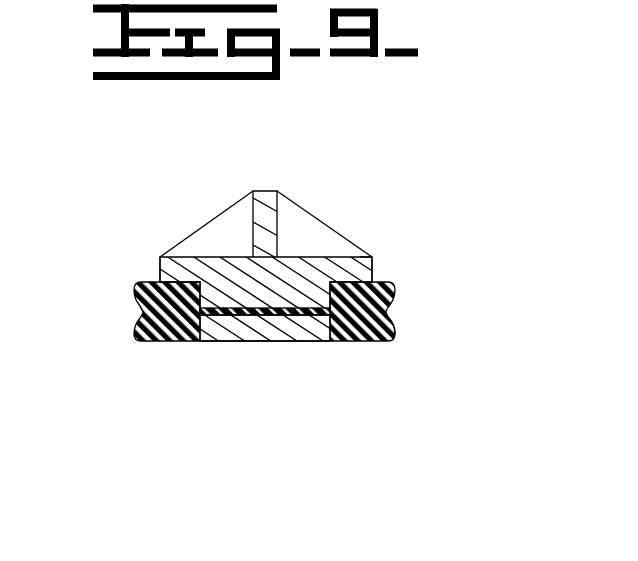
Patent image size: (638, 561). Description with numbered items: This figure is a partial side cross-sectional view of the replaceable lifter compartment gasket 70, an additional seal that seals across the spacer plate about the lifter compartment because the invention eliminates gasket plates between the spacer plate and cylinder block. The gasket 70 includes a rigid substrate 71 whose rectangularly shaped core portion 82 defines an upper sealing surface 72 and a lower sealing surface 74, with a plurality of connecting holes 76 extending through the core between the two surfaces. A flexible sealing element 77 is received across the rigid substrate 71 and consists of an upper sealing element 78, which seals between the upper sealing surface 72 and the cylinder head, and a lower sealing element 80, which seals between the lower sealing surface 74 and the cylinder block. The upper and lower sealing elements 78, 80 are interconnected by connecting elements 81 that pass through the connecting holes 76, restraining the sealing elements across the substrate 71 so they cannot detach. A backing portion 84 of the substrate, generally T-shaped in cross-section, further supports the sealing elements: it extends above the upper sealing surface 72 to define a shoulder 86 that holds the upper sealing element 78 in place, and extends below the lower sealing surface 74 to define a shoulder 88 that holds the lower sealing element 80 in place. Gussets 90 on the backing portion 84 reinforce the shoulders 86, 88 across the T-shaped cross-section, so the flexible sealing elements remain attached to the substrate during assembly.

The gasket 70 is at (352, 458).
The rigid substrate 71 is at (160, 257).
The upper sealing surface 72 is at (333, 343).
The lower sealing surface 74 is at (200, 342).
The connecting holes 76 is at (228, 315).
The flexible sealing element 77 is at (396, 333).
The upper sealing element 78 is at (397, 288).
The lower sealing element 80 is at (372, 257).
The connecting elements 81 is at (227, 315).
The core portion 82 is at (308, 343).
The backing portion 84 is at (277, 190).
The shoulder 86 is at (373, 280).
The shoulder 88 is at (157, 282).
The gussets 90 is at (225, 208).